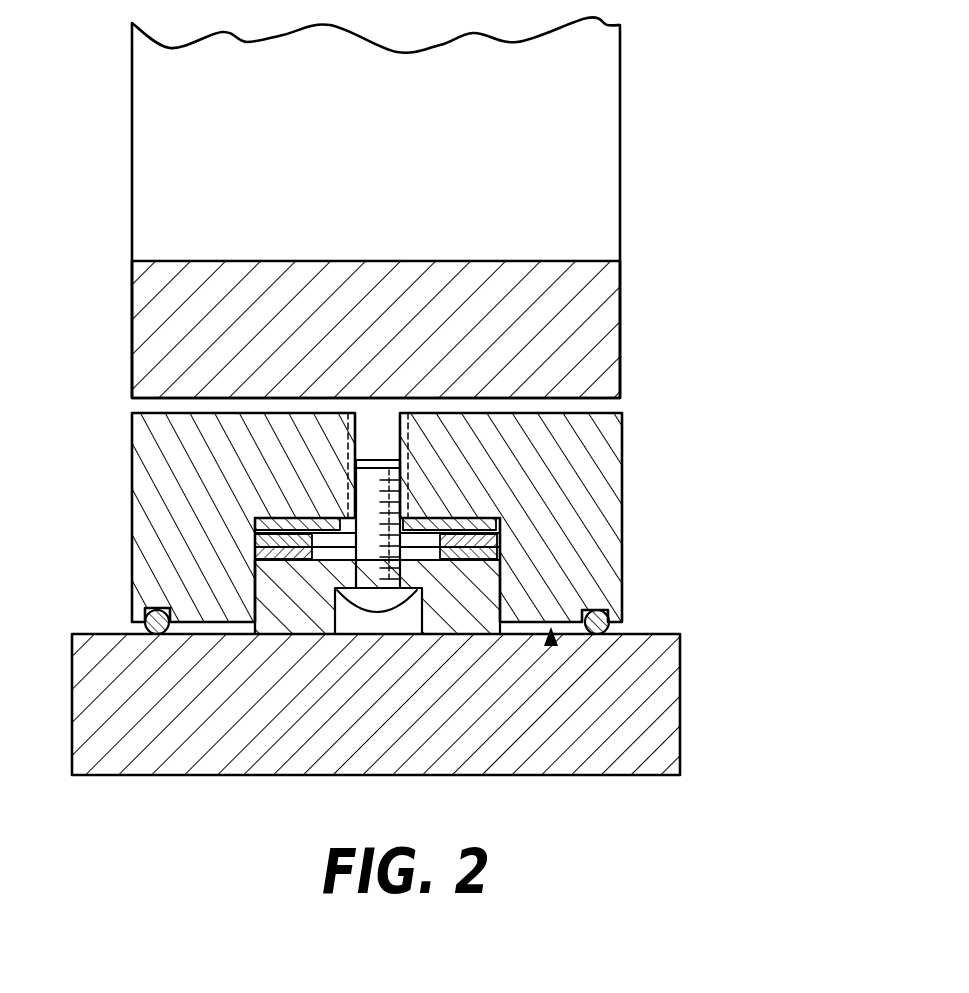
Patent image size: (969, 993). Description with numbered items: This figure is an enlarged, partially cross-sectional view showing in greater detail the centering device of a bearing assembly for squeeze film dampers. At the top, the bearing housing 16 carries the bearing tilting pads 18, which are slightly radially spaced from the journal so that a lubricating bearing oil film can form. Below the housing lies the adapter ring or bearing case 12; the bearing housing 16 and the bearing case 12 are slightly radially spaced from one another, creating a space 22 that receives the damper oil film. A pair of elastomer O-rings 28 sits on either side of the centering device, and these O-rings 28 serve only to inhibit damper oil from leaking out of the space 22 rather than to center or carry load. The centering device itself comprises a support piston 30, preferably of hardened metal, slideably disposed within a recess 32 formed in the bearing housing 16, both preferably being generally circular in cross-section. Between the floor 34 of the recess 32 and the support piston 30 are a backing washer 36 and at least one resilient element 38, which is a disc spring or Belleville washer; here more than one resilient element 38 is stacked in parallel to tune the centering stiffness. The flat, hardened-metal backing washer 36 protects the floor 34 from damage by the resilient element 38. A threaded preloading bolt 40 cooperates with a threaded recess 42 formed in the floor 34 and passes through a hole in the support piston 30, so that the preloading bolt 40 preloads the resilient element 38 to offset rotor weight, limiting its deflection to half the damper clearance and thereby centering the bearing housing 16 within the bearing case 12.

The bearing case 12 is at (607, 740).
The bearing housing 16 is at (623, 421).
The bearing tilting pads 18 is at (615, 313).
The space 22 is at (556, 640).
The elastomer O-rings 28 is at (613, 625).
The support piston 30 is at (483, 593).
The recess 32 is at (255, 584).
The floor 34 is at (262, 527).
The backing washer 36 is at (500, 530).
The resilient element 38 is at (482, 547).
The threaded preloading bolt 40 is at (382, 578).
The threaded recess 42 is at (363, 435).